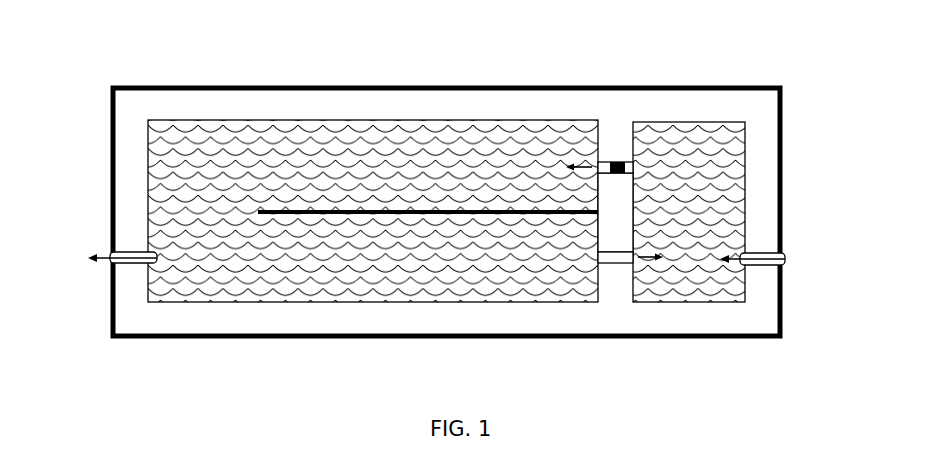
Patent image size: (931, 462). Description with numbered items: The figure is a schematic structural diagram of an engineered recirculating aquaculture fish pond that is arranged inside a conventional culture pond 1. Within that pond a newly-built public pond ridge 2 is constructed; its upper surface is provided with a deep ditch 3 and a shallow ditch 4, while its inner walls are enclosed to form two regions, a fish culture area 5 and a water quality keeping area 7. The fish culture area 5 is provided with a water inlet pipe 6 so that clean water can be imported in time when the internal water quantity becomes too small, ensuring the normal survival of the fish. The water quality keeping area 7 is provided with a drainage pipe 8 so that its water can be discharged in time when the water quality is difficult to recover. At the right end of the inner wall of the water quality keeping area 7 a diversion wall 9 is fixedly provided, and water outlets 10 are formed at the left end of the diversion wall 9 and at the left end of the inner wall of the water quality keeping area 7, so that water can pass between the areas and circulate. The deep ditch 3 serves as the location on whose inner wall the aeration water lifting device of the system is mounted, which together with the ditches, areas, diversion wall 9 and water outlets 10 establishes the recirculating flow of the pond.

The conventional culture pond 1 is at (718, 87).
The newly-built public pond ridge 2 is at (615, 210).
The deep ditch 3 is at (615, 162).
The shallow ditch 4 is at (615, 265).
The fish culture area 5 is at (690, 157).
The water inlet pipe 6 is at (782, 270).
The water quality keeping area 7 is at (376, 160).
The drainage pipe 8 is at (108, 255).
The diversion wall 9 is at (360, 214).
The water outlet 10 is at (206, 214).